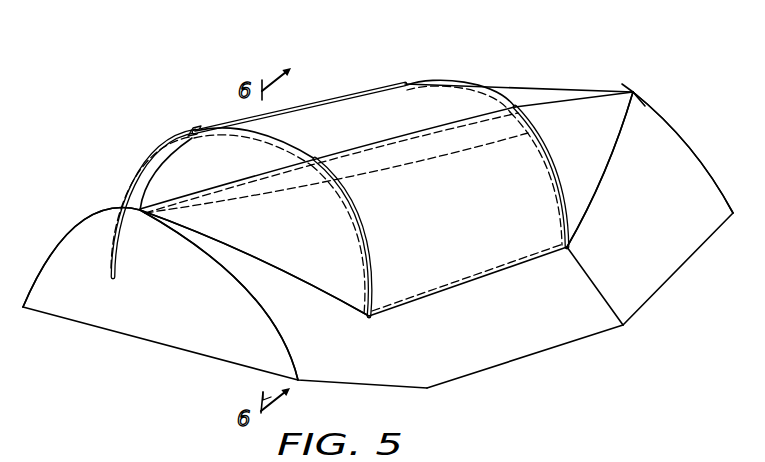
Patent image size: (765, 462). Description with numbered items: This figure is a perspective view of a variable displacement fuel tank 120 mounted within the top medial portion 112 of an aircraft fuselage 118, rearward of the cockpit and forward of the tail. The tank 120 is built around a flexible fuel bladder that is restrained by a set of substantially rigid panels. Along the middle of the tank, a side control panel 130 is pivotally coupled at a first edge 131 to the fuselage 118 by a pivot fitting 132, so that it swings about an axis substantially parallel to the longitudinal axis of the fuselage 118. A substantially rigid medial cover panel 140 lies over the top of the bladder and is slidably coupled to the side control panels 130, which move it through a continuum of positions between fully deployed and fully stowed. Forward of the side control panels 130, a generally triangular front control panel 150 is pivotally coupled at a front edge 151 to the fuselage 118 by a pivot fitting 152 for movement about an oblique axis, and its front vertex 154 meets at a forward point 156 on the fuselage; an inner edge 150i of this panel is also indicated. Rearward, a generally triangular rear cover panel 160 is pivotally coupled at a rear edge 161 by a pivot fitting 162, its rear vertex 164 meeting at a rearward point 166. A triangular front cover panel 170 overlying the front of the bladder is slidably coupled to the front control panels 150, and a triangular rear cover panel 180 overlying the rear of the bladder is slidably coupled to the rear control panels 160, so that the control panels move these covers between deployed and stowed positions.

The top medial portion 112 is at (573, 323).
The fuselage 118 is at (461, 395).
The variable displacement fuel tank 120 is at (205, 66).
The side control panel 130 is at (370, 88).
The first edge 131 is at (510, 270).
The pivot fitting 132 is at (430, 295).
The medial cover panel 140 is at (345, 115).
The front control panel 150 is at (145, 167).
The inner edge of dome section 150i is at (380, 197).
The front edge 151 is at (328, 297).
The pivot fitting 152 is at (283, 268).
The front vertex 154 is at (141, 215).
The forward point 156 is at (93, 231).
The rear cover panel 160 is at (575, 123).
The rear edge 161 is at (625, 137).
The pivot fitting 162 is at (593, 200).
The rear vertex 164 is at (633, 92).
The rearward point 166 is at (673, 86).
The front cover panel 170 is at (213, 150).
The rear cover panel 180 is at (497, 85).